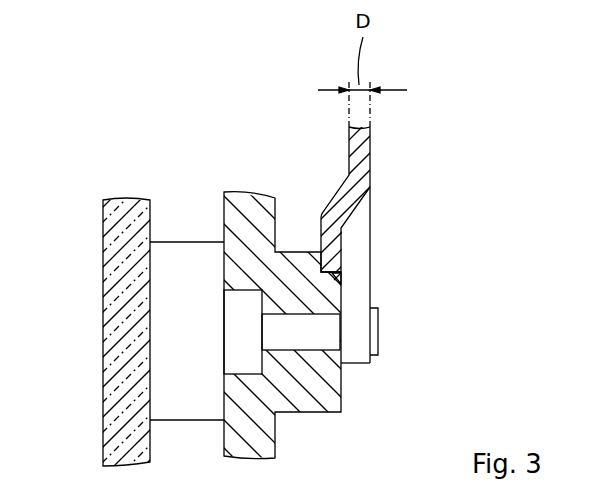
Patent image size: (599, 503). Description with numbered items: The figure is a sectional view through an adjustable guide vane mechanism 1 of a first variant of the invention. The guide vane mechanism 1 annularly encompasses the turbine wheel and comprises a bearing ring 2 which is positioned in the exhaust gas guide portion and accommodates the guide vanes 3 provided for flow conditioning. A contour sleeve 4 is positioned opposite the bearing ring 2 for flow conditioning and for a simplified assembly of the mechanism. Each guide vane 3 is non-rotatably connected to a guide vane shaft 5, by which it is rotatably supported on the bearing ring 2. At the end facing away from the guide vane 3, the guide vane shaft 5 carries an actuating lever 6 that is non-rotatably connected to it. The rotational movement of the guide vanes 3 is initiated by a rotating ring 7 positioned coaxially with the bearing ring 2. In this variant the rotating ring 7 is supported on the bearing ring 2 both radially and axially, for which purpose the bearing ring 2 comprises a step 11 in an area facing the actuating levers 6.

The guide vane mechanism 1 is at (490, 182).
The bearing ring 2 is at (251, 205).
The guide vane 3 is at (182, 338).
The contour sleeve 4 is at (110, 327).
The guide vane shaft 5 is at (308, 333).
The actuating lever 6 is at (363, 263).
The rotating ring 7 is at (355, 148).
The step 11 is at (343, 245).